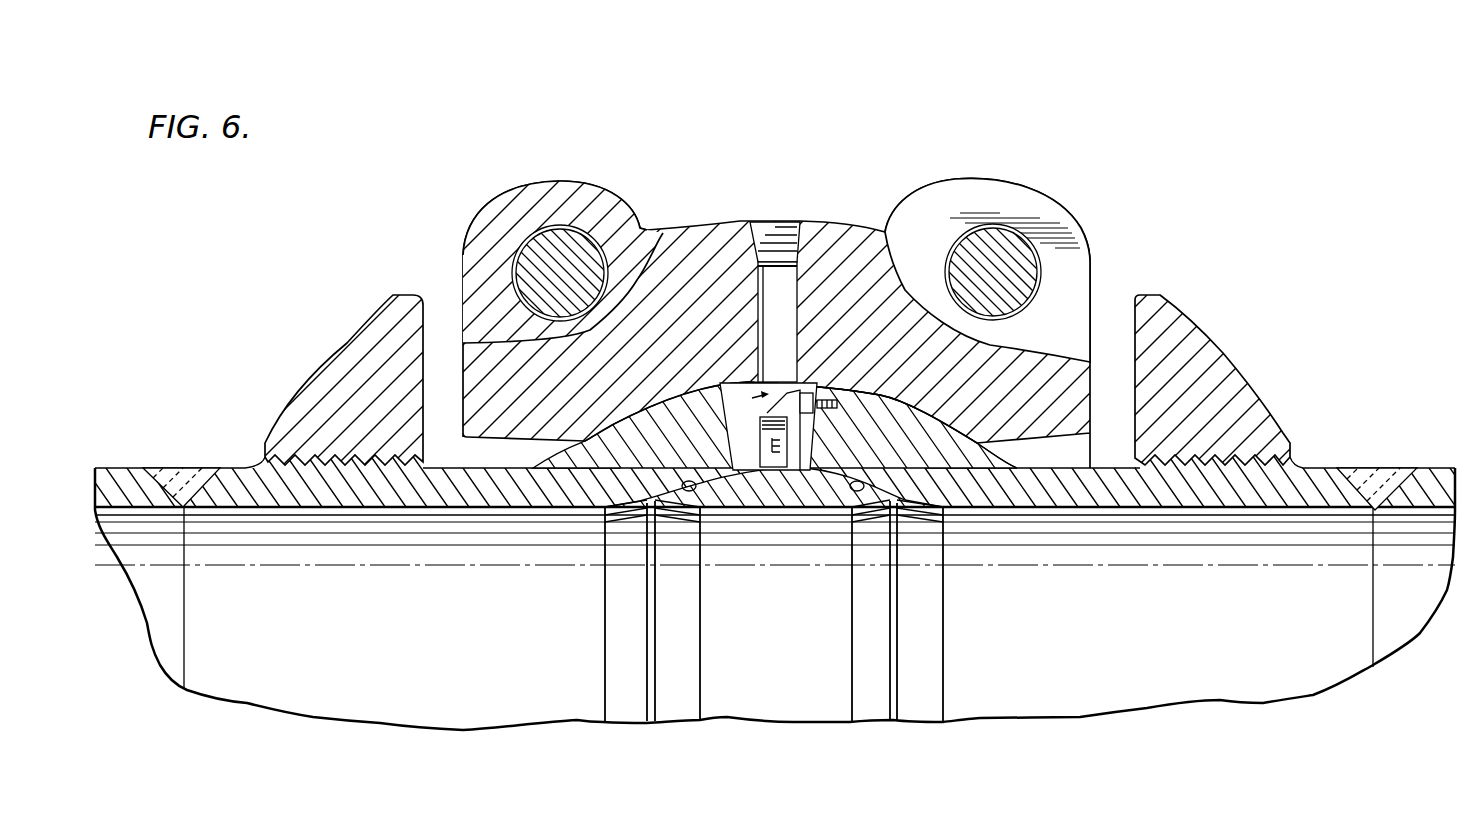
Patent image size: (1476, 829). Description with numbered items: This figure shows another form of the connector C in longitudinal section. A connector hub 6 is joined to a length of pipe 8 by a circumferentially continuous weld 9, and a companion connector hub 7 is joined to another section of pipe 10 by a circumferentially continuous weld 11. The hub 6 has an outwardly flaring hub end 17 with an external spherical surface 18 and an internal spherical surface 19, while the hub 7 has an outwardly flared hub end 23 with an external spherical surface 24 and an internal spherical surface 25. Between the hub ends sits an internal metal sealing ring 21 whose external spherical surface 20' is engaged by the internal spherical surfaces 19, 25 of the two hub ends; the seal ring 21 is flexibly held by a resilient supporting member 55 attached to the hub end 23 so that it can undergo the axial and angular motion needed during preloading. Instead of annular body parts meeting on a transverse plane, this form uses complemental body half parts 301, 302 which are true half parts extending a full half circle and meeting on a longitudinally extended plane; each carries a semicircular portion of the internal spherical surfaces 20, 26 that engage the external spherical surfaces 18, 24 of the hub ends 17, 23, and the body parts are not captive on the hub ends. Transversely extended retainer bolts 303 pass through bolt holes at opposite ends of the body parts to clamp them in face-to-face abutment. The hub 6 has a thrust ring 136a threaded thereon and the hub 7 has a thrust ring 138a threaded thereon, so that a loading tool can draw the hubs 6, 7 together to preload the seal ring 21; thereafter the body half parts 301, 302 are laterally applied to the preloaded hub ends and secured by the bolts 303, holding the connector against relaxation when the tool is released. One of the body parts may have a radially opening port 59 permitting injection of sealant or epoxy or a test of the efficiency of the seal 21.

The connector C is at (768, 276).
The connector hub 6 is at (393, 502).
The connector hub 7 is at (1206, 498).
The pipe 8 is at (113, 482).
The weld 9 is at (188, 482).
The pipe 10 is at (1433, 482).
The weld 11 is at (1363, 481).
The hub end 17 is at (626, 400).
The external spherical surface 18 is at (676, 398).
The internal spherical surface 19 is at (686, 492).
The internal spherical surface 20 is at (768, 323).
The external spherical surface 20' is at (774, 547).
The metal sealing ring 21 is at (773, 492).
The hub end 23 is at (906, 422).
The external spherical surface 24 is at (865, 395).
The internal spherical surface 25 is at (830, 495).
The internal spherical surface 26 is at (948, 420).
The resilient supporting member 55 is at (812, 380).
The port 59 is at (762, 293).
The thrust ring 136a is at (342, 367).
The thrust ring 138a is at (1212, 358).
The body half part 301 is at (645, 224).
The body half part 302 is at (975, 176).
The retainer bolts 303 is at (520, 263).